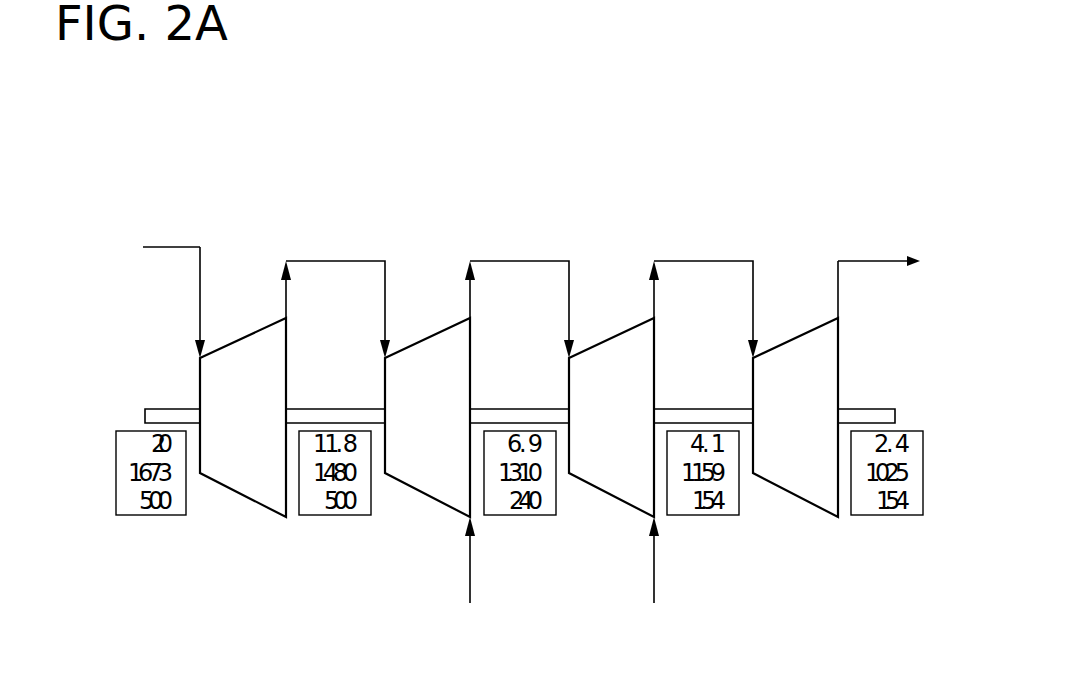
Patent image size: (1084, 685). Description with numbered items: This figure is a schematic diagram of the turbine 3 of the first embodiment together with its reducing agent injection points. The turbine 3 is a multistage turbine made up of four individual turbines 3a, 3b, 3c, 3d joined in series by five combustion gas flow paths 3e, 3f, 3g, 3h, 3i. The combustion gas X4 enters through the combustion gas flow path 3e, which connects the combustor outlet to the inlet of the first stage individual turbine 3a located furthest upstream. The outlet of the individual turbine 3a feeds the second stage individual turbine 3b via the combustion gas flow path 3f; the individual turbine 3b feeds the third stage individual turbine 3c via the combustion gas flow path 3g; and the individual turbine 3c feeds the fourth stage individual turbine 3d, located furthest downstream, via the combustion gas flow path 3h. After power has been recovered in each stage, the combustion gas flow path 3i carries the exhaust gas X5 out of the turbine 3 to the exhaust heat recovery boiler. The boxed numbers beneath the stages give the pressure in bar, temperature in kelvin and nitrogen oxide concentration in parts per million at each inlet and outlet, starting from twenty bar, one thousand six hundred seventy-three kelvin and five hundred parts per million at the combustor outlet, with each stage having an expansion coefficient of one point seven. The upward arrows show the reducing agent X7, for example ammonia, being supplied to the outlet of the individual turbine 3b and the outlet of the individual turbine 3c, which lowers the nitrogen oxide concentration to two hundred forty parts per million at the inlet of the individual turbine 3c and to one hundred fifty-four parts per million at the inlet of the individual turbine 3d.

The turbine 3 is at (866, 188).
The individual turbine 3a is at (248, 335).
The individual turbine 3b is at (432, 335).
The individual turbine 3c is at (616, 335).
The individual turbine 3d is at (798, 335).
The combustion gas flow path 3e is at (200, 298).
The combustion gas flow path 3f is at (385, 297).
The combustion gas flow path 3g is at (569, 297).
The combustion gas flow path 3h is at (752, 297).
The combustion gas flow path 3i is at (838, 297).
The combustion gas X4 is at (157, 247).
The exhaust gas X5 is at (896, 260).
The reducing agent X7 is at (562, 577).